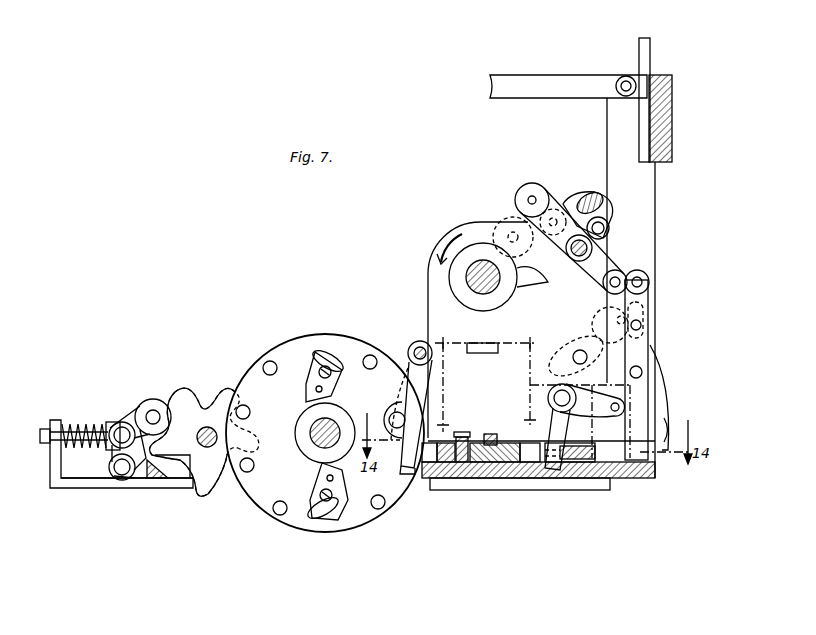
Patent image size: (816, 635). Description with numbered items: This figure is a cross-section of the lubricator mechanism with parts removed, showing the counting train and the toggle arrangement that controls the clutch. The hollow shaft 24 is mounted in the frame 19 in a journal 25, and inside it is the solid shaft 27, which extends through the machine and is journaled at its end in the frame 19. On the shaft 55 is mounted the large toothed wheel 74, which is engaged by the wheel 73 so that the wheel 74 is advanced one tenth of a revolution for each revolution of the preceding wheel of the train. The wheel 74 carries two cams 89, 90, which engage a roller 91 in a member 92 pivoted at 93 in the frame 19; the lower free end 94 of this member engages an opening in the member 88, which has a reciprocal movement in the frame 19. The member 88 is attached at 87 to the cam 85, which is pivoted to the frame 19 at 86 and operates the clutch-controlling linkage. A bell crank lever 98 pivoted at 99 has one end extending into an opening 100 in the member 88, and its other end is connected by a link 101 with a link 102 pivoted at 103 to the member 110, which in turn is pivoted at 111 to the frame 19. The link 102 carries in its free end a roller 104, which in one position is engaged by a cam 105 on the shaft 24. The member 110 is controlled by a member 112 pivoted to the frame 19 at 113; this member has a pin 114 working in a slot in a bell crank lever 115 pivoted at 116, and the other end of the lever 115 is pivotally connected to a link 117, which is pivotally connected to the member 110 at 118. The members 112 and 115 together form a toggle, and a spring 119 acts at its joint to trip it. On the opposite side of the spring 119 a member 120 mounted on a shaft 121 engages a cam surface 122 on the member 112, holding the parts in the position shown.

The frame 19 is at (582, 487).
The shaft 24 is at (474, 298).
The journal 25 is at (457, 226).
The solid shaft 27 is at (466, 277).
The shaft 55 is at (313, 443).
The wheel 73 is at (196, 470).
The wheel 74 is at (281, 356).
The cam 85 is at (500, 452).
The pivot 86 is at (490, 434).
The attachment point 87 is at (461, 432).
The member 88 is at (447, 476).
The cam 89 is at (330, 366).
The cam 90 is at (322, 508).
The roller 91 is at (391, 412).
The member 92 is at (426, 387).
The pivot 93 is at (416, 345).
The lower free end 94 is at (407, 482).
The bell crank lever 98 is at (606, 414).
The pivot 99 is at (548, 396).
The opening 100 is at (556, 479).
The link 101 is at (640, 262).
The link 102 is at (560, 236).
The pivot 103 is at (578, 259).
The roller 104 is at (530, 184).
The cam 105 is at (530, 281).
The member 110 is at (572, 199).
The pivot 111 is at (554, 210).
The member 112 is at (640, 353).
The pivot 113 is at (644, 372).
The pin 114 is at (647, 319).
The bell crank lever 115 is at (645, 305).
The pivot 116 is at (649, 280).
The link 117 is at (608, 232).
The pivot 118 is at (622, 222).
The spring 119 is at (669, 384).
The member 120 is at (596, 339).
The shaft 121 is at (576, 355).
The cam surface 122 is at (619, 318).